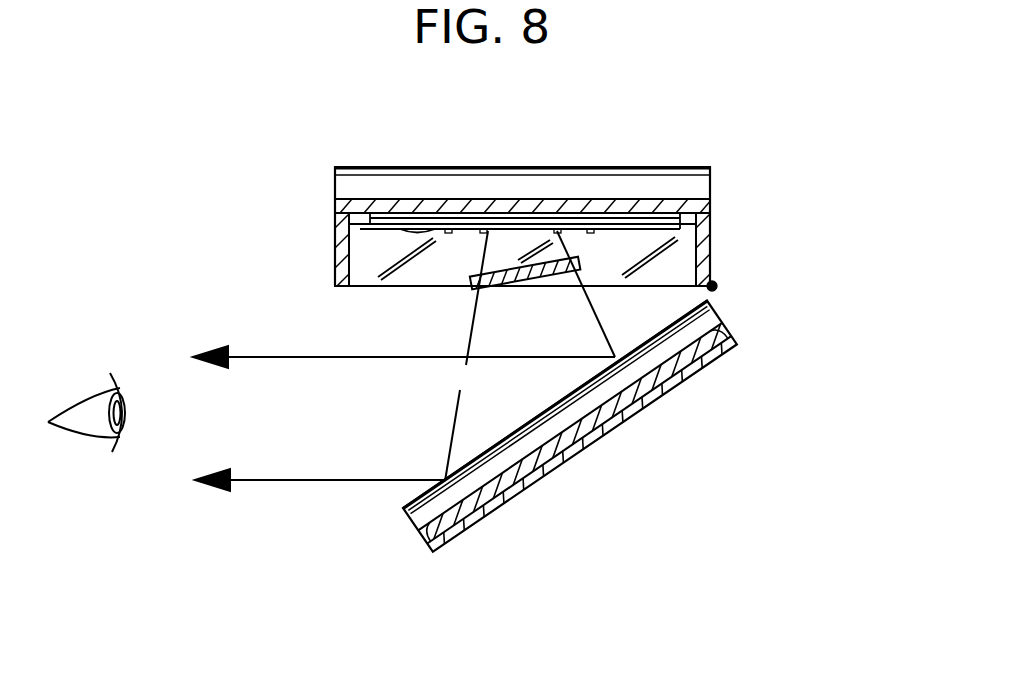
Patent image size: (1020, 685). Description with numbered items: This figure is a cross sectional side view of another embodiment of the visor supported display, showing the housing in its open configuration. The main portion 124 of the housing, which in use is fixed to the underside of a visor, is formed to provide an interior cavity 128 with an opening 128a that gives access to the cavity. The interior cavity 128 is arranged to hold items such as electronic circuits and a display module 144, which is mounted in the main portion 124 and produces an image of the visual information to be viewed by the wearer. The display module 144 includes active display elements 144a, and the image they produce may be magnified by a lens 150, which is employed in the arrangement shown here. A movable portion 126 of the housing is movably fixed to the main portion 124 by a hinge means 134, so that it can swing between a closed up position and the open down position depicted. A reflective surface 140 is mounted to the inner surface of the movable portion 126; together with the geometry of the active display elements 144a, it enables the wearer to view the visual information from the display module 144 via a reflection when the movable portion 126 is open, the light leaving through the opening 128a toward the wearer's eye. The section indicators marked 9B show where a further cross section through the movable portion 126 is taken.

The housing 124 is at (693, 186).
The frame with hatched walls 144 is at (345, 222).
The circuit board 144a is at (507, 232).
The light source unit 150 is at (520, 270).
The reflecting member 128 is at (375, 254).
The light exit opening 128a is at (426, 294).
The pivot shaft 134 is at (717, 286).
The light guide plate 126 is at (663, 380).
The reflector sheet 140 is at (590, 422).
The section line 9B is at (476, 495).